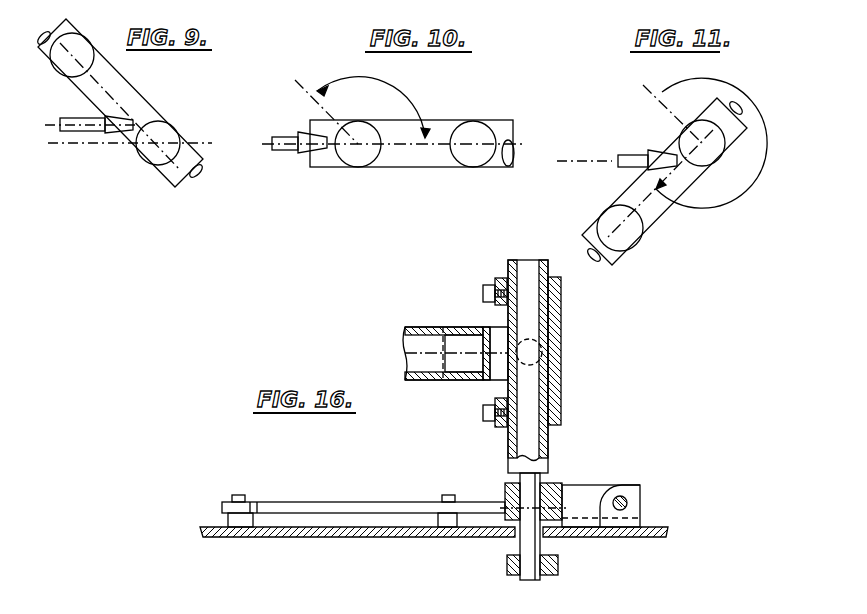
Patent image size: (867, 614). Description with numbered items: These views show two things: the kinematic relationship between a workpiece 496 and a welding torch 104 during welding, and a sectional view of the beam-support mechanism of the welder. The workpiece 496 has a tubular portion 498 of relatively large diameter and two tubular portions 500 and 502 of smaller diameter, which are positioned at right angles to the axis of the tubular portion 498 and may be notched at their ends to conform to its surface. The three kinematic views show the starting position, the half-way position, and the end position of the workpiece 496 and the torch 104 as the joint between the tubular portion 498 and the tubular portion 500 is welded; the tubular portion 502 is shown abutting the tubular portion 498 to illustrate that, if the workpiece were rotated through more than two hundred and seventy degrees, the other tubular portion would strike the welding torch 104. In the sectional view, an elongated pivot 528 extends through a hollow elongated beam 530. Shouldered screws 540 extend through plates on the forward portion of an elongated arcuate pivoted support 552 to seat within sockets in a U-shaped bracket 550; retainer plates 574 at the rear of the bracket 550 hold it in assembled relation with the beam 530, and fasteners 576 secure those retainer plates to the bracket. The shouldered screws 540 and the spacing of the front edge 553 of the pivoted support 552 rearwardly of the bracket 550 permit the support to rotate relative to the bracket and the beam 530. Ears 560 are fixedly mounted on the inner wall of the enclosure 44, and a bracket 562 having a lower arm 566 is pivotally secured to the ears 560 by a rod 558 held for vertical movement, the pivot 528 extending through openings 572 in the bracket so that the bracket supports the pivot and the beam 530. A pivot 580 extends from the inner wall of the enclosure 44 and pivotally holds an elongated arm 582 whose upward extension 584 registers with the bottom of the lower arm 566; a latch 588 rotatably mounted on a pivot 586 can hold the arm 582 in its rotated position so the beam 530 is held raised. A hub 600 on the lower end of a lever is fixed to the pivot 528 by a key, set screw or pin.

In FIG. 16, the enclosure 44 is at (305, 537).
In FIG. 9, the welding torch 104 is at (78, 132).
In FIG. 10, the welding torch 104 is at (285, 152).
In FIG. 11, the welding torch 104 is at (628, 154).
In FIG. 9, the workpiece 496 is at (158, 101).
In FIG. 10, the workpiece 496 is at (446, 118).
In FIG. 11, the workpiece 496 is at (669, 221).
In FIG. 9, the tubular portion 498 is at (84, 94).
In FIG. 10, the tubular portion 498 is at (422, 155).
In FIG. 11, the tubular portion 498 is at (628, 193).
In FIG. 9, the tubular portion 500 is at (155, 168).
In FIG. 10, the tubular portion 500 is at (340, 160).
In FIG. 11, the tubular portion 500 is at (704, 170).
In FIG. 9, the tubular portion 502 is at (96, 70).
In FIG. 10, the tubular portion 502 is at (498, 121).
In FIG. 11, the tubular portion 502 is at (596, 228).
In FIG. 16, the pivot 528 is at (530, 574).
In FIG. 16, the beam 530 is at (516, 250).
In FIG. 16, the shouldered screws 540 is at (541, 352).
In FIG. 16, the U-shaped bracket 550 is at (561, 302).
In FIG. 16, the pivoted support 552 is at (425, 327).
In FIG. 16, the front edge 553 is at (488, 378).
In FIG. 16, the rod 558 is at (628, 503).
In FIG. 16, the ears 560 is at (633, 487).
In FIG. 16, the bracket 562 is at (569, 475).
In FIG. 16, the lower arm 566 is at (594, 486).
In FIG. 16, the openings 572 is at (507, 494).
In FIG. 16, the retainer plates 574 is at (499, 281).
In FIG. 16, the fasteners 576 is at (482, 287).
In FIG. 16, the pivot 580 is at (452, 495).
In FIG. 16, the arm 582 is at (307, 503).
In FIG. 16, the upward extension 584 is at (566, 508).
In FIG. 16, the pivot 586 is at (228, 522).
In FIG. 16, the latch 588 is at (232, 498).
In FIG. 16, the hub 600 is at (558, 566).